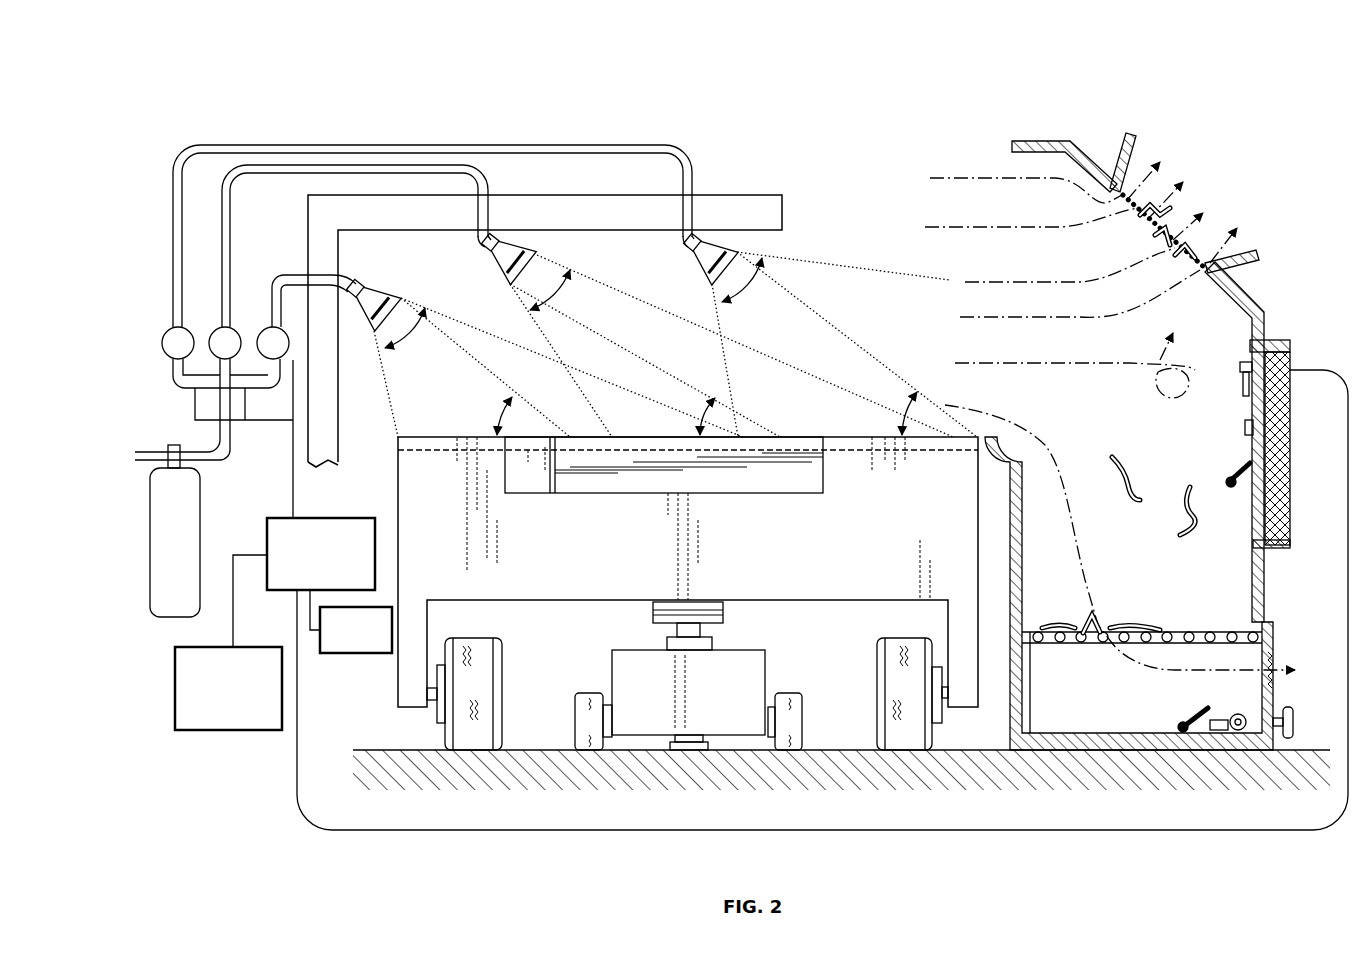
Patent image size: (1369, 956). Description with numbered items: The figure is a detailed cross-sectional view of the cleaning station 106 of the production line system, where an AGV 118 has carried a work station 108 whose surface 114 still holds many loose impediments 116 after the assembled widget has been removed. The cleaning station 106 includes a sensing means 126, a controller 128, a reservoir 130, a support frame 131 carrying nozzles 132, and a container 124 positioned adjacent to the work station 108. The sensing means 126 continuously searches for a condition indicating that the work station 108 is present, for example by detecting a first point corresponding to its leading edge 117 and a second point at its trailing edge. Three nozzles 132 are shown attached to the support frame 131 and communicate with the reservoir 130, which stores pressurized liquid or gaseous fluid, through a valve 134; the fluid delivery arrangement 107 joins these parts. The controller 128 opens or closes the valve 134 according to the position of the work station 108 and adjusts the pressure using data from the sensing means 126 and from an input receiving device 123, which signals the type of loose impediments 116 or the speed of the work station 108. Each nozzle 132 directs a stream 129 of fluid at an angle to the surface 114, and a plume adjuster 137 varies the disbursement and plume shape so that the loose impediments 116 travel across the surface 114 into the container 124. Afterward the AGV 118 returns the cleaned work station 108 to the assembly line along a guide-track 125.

The cleaning station 106 is at (829, 142).
The fluid delivery system 107 is at (278, 120).
The work station 108 is at (397, 467).
The surface 114 is at (808, 435).
The loose impediments 116 is at (1147, 243).
The leading edge 117 is at (668, 557).
The AGV 118 is at (767, 663).
The input receiving device 123 is at (258, 730).
The container 124 is at (1268, 306).
The guide-track 125 is at (690, 750).
The sensing means 126 is at (350, 653).
The controller 128 is at (310, 518).
The stream 129 is at (830, 256).
The reservoir 130 is at (200, 488).
The support frame 131 is at (397, 207).
The nozzle 132 is at (372, 282).
The valve 134 is at (172, 328).
The plume adjuster 137 is at (373, 313).